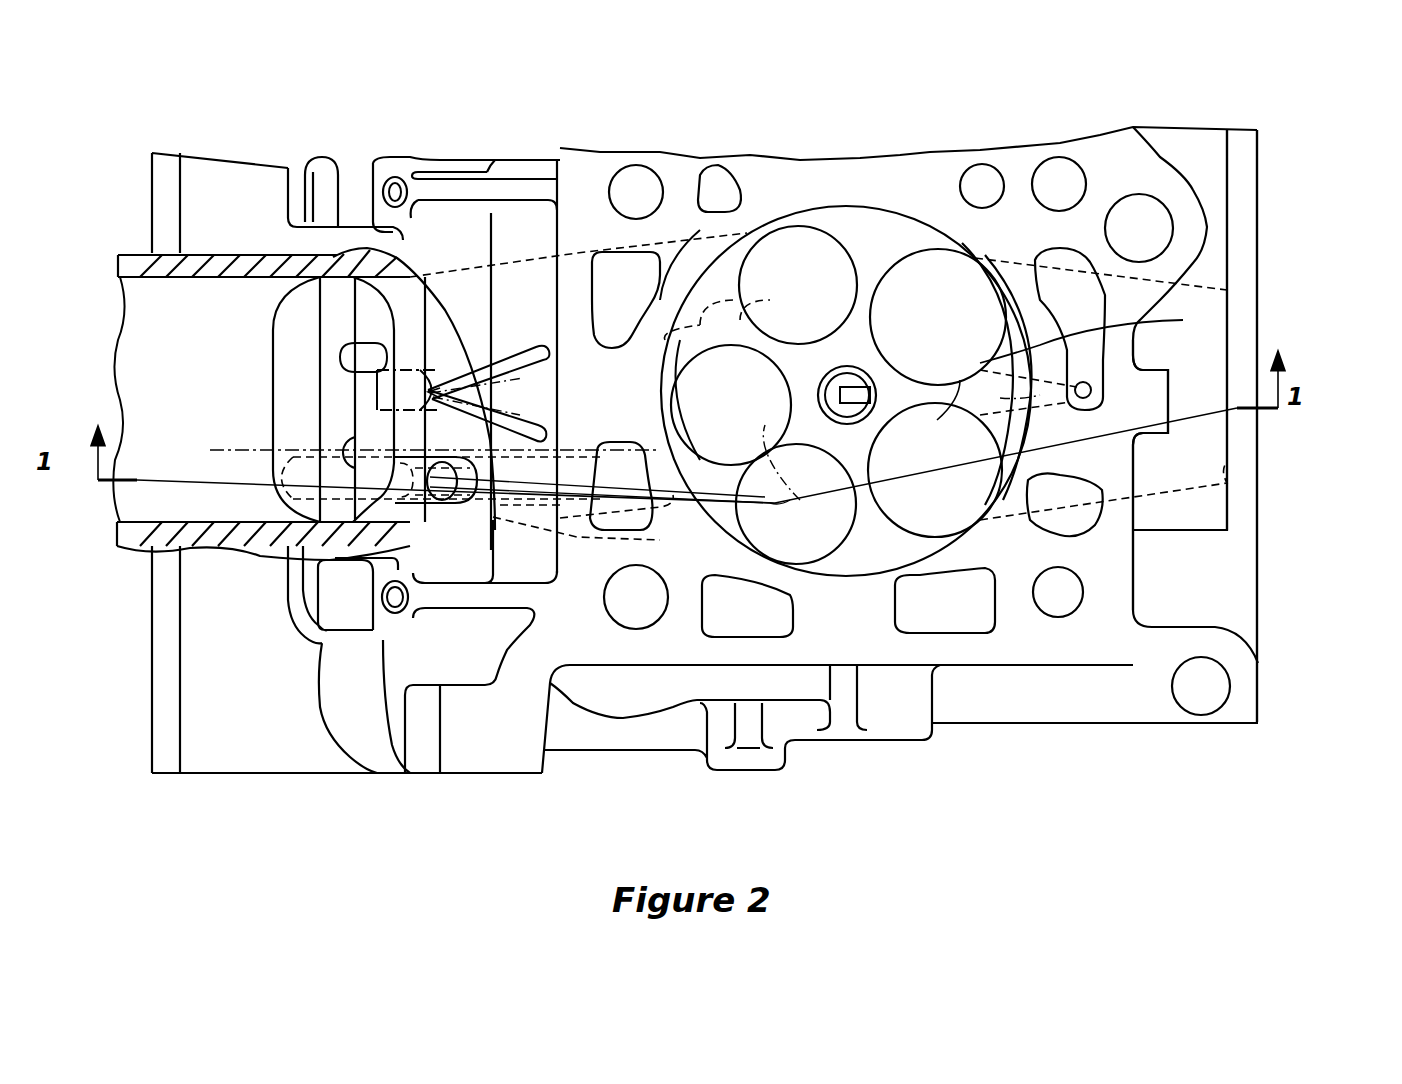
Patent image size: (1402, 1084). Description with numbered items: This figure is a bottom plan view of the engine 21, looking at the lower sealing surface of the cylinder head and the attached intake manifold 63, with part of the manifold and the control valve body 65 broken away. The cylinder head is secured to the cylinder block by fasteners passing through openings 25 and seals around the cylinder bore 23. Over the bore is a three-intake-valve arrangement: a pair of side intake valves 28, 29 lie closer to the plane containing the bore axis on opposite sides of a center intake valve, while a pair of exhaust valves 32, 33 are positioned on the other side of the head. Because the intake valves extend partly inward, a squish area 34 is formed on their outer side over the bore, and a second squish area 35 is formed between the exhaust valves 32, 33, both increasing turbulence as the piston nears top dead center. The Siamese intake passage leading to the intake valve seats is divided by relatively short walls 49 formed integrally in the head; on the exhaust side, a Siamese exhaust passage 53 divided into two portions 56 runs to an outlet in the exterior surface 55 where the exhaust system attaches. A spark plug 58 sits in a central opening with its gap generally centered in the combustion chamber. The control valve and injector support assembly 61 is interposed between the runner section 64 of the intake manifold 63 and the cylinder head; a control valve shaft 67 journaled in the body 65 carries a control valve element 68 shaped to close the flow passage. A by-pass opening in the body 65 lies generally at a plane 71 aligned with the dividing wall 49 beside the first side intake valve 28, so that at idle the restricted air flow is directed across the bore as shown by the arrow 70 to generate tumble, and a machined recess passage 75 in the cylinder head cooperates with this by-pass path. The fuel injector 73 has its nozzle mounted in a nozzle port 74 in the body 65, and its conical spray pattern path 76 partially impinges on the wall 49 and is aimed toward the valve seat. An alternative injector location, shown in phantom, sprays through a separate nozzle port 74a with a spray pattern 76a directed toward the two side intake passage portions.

The engine 21 is at (1320, 515).
The cylinder bore 23 is at (1142, 333).
The openings 25 is at (625, 182).
The side intake valve 28 is at (806, 548).
The side intake valve 29 is at (800, 240).
The exhaust valve 32 is at (955, 518).
The exhaust valve 33 is at (930, 265).
The squish area 34 is at (660, 368).
The squish area 35 is at (1027, 395).
The walls 49 is at (736, 312).
The exhaust passage 53 is at (1222, 475).
The exterior surface 55 is at (1260, 584).
The portions 56 is at (1055, 280).
The spark plug 58 is at (855, 380).
The control valve and injector support assembly 61 is at (270, 236).
The intake manifold 63 is at (132, 548).
The runner section 64 is at (205, 556).
The control valve body 65 is at (365, 262).
The control valve shaft 67 is at (322, 298).
The control valve element 68 is at (274, 358).
The arrow 70 is at (940, 322).
The plane 71 is at (244, 448).
The fuel injector 73 is at (333, 580).
The nozzle port 74 is at (447, 520).
The nozzle port 74a is at (360, 347).
The machined recess passage 75 is at (522, 512).
The conical spray pattern path 76 is at (790, 470).
The spray pattern 76a is at (498, 372).